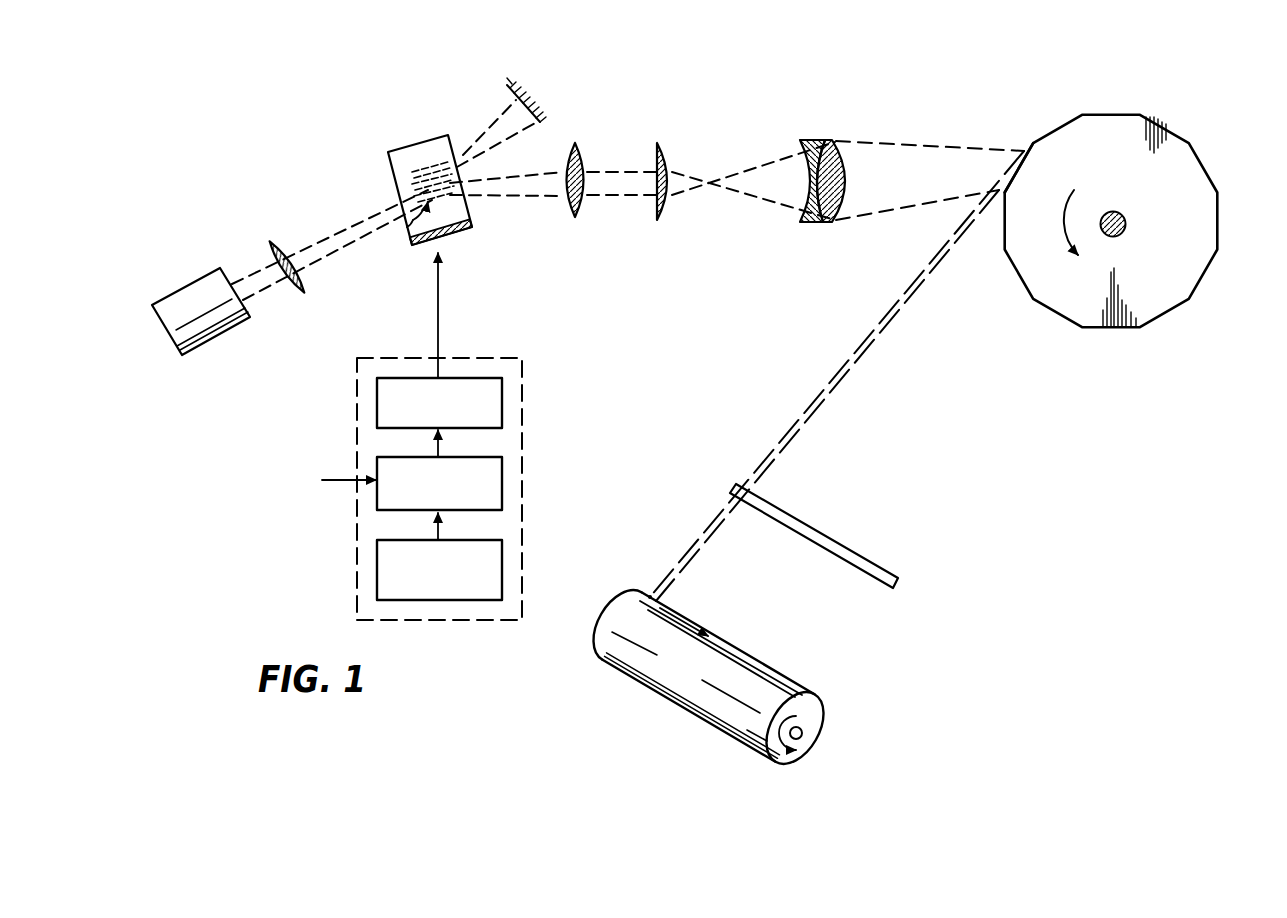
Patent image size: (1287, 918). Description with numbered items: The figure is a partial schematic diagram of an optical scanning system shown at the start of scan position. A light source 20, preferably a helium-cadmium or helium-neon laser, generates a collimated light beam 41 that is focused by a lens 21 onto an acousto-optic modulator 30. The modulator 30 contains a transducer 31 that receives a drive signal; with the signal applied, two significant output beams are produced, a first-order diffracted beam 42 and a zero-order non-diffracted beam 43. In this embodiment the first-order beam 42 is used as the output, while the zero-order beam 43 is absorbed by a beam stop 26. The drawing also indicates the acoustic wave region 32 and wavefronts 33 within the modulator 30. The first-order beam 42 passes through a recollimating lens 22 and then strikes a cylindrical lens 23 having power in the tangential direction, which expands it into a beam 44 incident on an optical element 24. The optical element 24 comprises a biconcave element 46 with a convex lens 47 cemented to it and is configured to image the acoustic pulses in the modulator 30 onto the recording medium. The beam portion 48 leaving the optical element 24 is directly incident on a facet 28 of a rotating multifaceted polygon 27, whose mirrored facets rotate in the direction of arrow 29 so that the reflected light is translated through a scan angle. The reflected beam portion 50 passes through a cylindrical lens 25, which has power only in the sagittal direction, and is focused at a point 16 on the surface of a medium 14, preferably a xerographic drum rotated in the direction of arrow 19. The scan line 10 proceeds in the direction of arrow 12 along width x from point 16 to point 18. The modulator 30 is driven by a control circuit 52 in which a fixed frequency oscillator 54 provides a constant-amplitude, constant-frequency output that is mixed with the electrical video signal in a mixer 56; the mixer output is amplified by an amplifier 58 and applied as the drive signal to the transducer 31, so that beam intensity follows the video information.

The scan line 10 is at (756, 664).
The arrow 12 is at (698, 618).
The medium 14 is at (679, 705).
The point 16 is at (648, 596).
The point 18 is at (798, 689).
The arrow 19 is at (806, 731).
The light source 20 is at (197, 277).
The lens 21 is at (283, 242).
The recollimating lens 22 is at (571, 209).
The cylindrical lens 23 is at (657, 205).
The optical element 24 is at (828, 135).
The cylindrical lens 25 is at (847, 548).
The beam stop 26 is at (542, 97).
The rotating multifaceted polygon 27 is at (1009, 262).
The facet 28 is at (1027, 166).
The arrow 29 is at (1066, 229).
The acousto-optic modulator 30 is at (414, 130).
The transducer 31 is at (457, 242).
The acoustic wave direction 32 is at (408, 224).
The acoustic wavefronts 33 is at (394, 172).
The light beam 41 is at (247, 277).
The first-order diffracted beam 42 is at (538, 173).
The zero-order non-diffracted beam 43 is at (488, 125).
The beam 44 is at (750, 203).
The biconcave element 46 is at (823, 140).
The convex lens 47 is at (838, 143).
The beam portion 48 is at (942, 143).
The beam portion 50 is at (870, 341).
The control circuit 52 is at (415, 460).
The fixed frequency oscillator 54 is at (503, 548).
The mixer 56 is at (377, 455).
The amplifier 58 is at (377, 384).